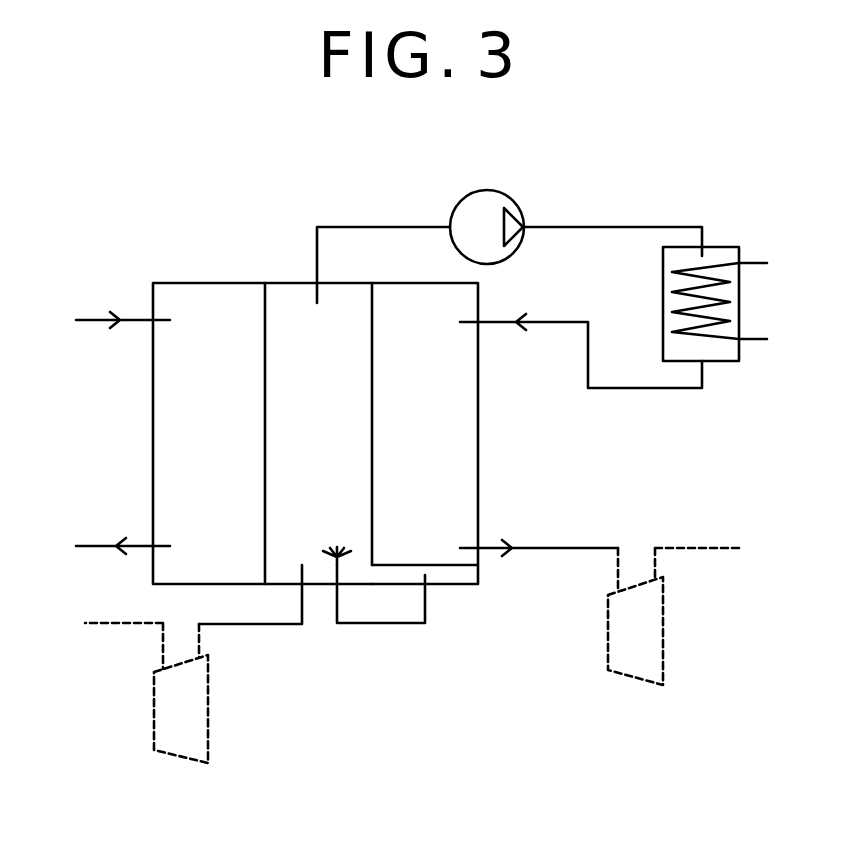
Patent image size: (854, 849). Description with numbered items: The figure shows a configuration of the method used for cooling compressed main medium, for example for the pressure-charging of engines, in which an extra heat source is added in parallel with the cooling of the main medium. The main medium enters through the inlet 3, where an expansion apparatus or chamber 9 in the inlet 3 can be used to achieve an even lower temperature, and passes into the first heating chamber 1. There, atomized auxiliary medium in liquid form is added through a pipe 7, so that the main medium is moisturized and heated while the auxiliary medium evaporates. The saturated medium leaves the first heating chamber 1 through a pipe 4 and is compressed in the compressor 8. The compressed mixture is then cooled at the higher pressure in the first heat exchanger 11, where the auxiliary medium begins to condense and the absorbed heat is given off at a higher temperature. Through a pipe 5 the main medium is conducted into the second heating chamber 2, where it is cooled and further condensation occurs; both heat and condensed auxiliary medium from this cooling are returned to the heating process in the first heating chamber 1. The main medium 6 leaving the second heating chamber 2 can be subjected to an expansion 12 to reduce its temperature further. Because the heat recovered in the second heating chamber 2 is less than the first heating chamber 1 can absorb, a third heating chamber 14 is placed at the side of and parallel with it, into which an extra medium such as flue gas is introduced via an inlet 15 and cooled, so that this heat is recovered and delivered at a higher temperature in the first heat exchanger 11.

The first heating chamber 1 is at (330, 437).
The second heating chamber 2 is at (432, 438).
The inlet 3 is at (298, 598).
The pipe 4 is at (317, 267).
The pipe 5 is at (542, 320).
The main medium 6 is at (530, 545).
The pipe 7 is at (387, 625).
The compressor 8 is at (498, 186).
The expansion apparatus or chamber 9 is at (208, 706).
The first heat exchanger 11 is at (740, 313).
The expansion 12 is at (665, 633).
The third heating chamber 14 is at (231, 437).
The inlet 15 is at (92, 318).